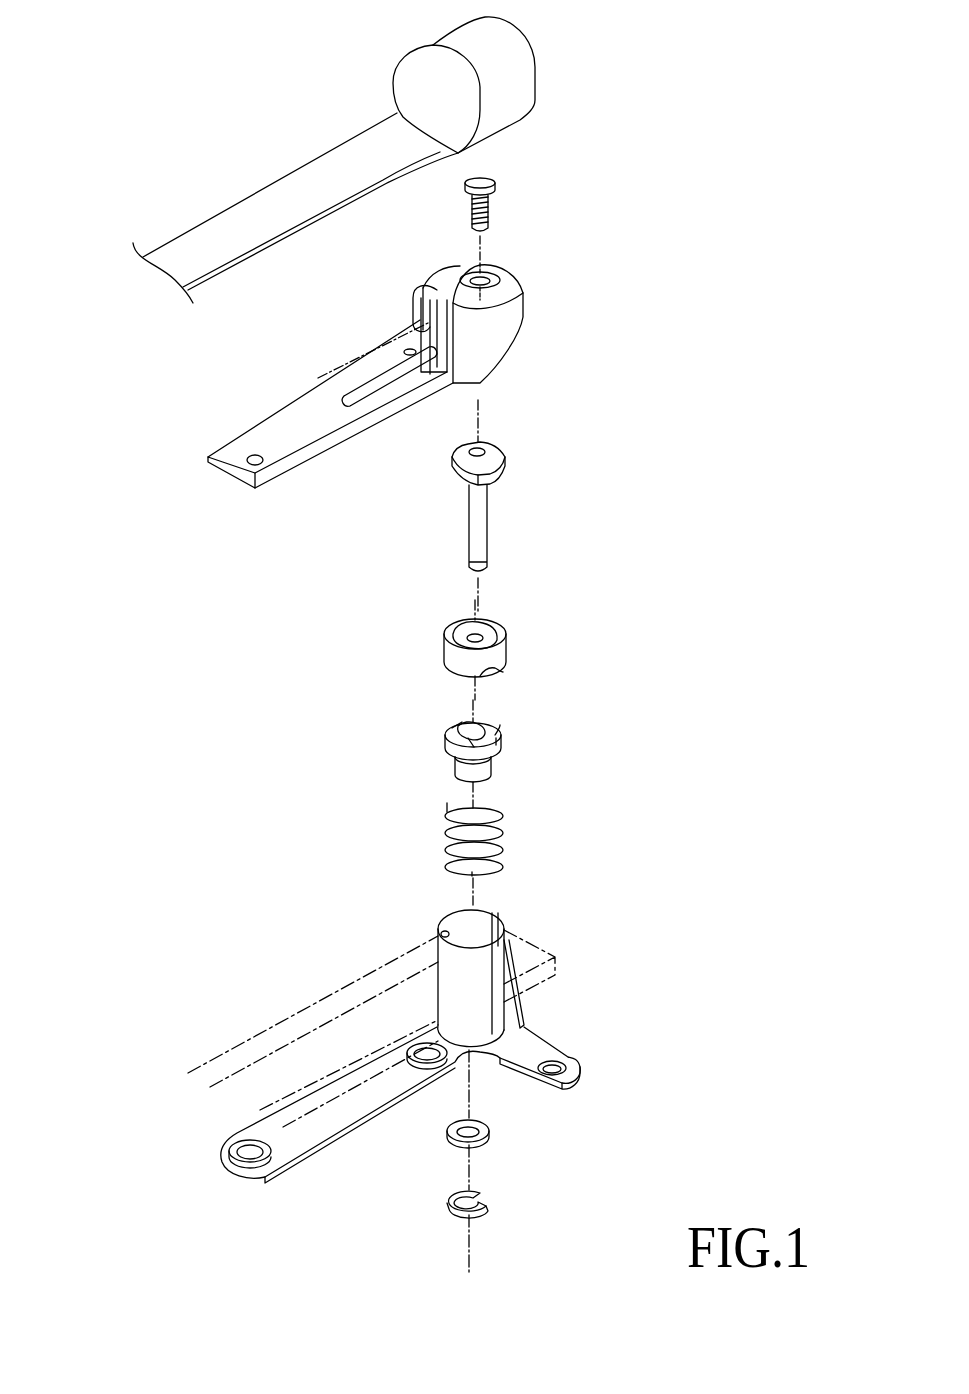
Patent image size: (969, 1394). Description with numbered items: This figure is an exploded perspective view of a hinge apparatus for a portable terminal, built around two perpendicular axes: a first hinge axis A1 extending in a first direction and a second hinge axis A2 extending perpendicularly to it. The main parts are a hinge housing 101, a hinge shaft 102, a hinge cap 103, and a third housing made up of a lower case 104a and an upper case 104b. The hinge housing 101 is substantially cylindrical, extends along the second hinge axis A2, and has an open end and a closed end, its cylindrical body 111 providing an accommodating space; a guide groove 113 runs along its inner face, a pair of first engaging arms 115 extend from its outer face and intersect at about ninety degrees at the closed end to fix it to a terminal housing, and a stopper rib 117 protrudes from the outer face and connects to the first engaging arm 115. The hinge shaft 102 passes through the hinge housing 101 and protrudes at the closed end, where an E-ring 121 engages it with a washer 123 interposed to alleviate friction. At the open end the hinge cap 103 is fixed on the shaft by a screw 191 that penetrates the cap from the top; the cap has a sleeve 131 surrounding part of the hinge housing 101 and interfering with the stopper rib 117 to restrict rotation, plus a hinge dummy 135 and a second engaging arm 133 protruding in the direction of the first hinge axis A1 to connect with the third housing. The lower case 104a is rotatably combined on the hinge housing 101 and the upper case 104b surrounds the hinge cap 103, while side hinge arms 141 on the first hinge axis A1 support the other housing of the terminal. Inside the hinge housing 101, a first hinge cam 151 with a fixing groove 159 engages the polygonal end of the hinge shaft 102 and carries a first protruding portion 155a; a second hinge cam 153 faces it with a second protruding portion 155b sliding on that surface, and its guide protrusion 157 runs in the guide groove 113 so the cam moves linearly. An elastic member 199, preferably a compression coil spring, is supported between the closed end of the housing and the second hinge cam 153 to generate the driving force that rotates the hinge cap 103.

The hinge housing 101 is at (441, 1038).
The hinge shaft 102 is at (506, 523).
The hinge cap 103 is at (474, 323).
The lower case 104a is at (265, 1022).
The upper case 104b is at (549, 37).
The cylindrical housing 111 is at (462, 919).
The guide groove 113 is at (500, 921).
The first engaging arm 115 is at (572, 1071).
The stopper rib 117 is at (529, 998).
The E-ring 121 is at (490, 1202).
The washer 123 is at (489, 1131).
The sleeve 131 is at (495, 343).
The second engaging arm 133 is at (292, 460).
The hinge dummy 135 is at (428, 291).
The side hinge arm 141 is at (465, 46).
The first hinge cam 151 is at (487, 630).
The second hinge cam 153 is at (490, 750).
The first protruding portion 155a is at (502, 672).
The second protruding portion 155b is at (496, 735).
The guide protrusion 157 is at (492, 749).
The fixing groove 159 is at (455, 630).
The screw 191 is at (490, 206).
The elastic member 199 is at (426, 848).
The first hinge axis A1 is at (332, 378).
The second hinge axis A2 is at (470, 1256).